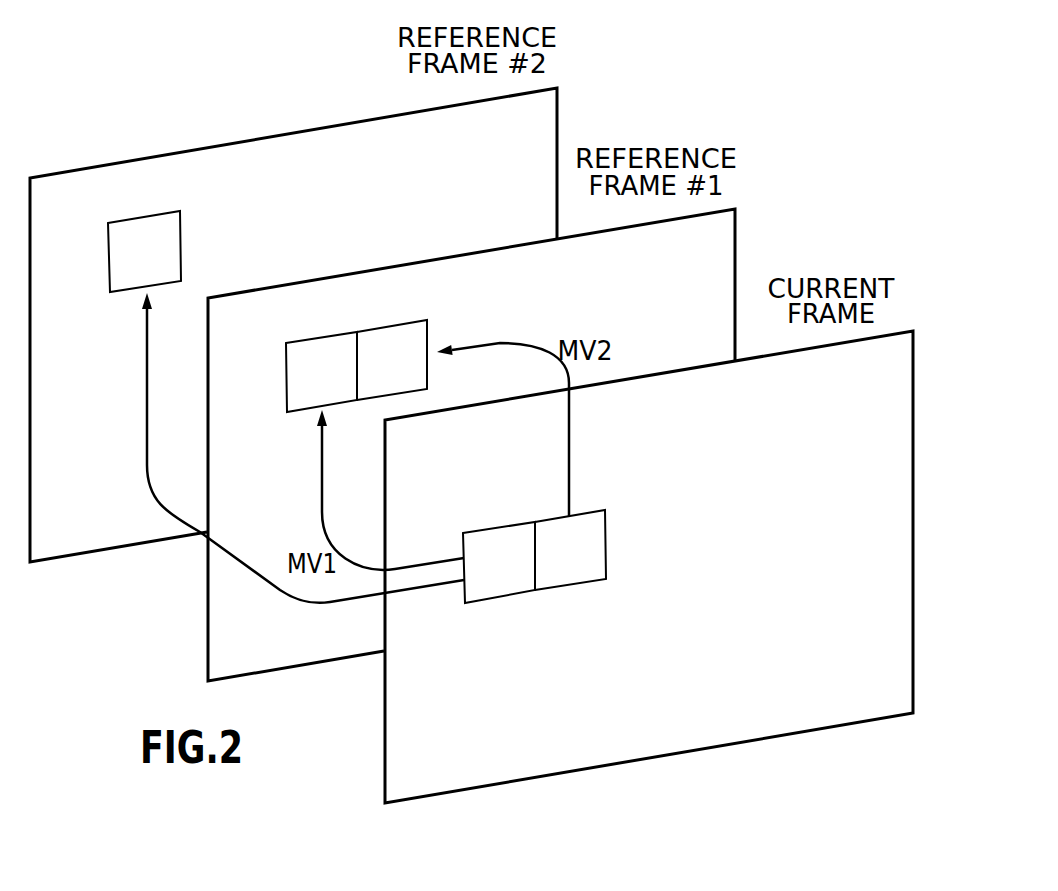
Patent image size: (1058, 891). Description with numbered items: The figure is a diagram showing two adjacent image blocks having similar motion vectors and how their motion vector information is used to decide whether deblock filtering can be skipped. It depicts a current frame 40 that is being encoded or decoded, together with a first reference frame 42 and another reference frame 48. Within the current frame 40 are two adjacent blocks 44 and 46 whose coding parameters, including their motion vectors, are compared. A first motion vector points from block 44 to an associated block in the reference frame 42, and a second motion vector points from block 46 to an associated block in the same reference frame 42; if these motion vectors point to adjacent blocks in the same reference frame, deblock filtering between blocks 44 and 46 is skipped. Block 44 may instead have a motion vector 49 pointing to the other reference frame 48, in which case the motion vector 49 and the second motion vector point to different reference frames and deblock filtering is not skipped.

The current frame 40 is at (475, 790).
The reference frame 42 is at (295, 668).
The reference frame 48 is at (120, 551).
The image block 44 is at (485, 577).
The image block 46 is at (557, 564).
The motion vector 49 is at (268, 583).